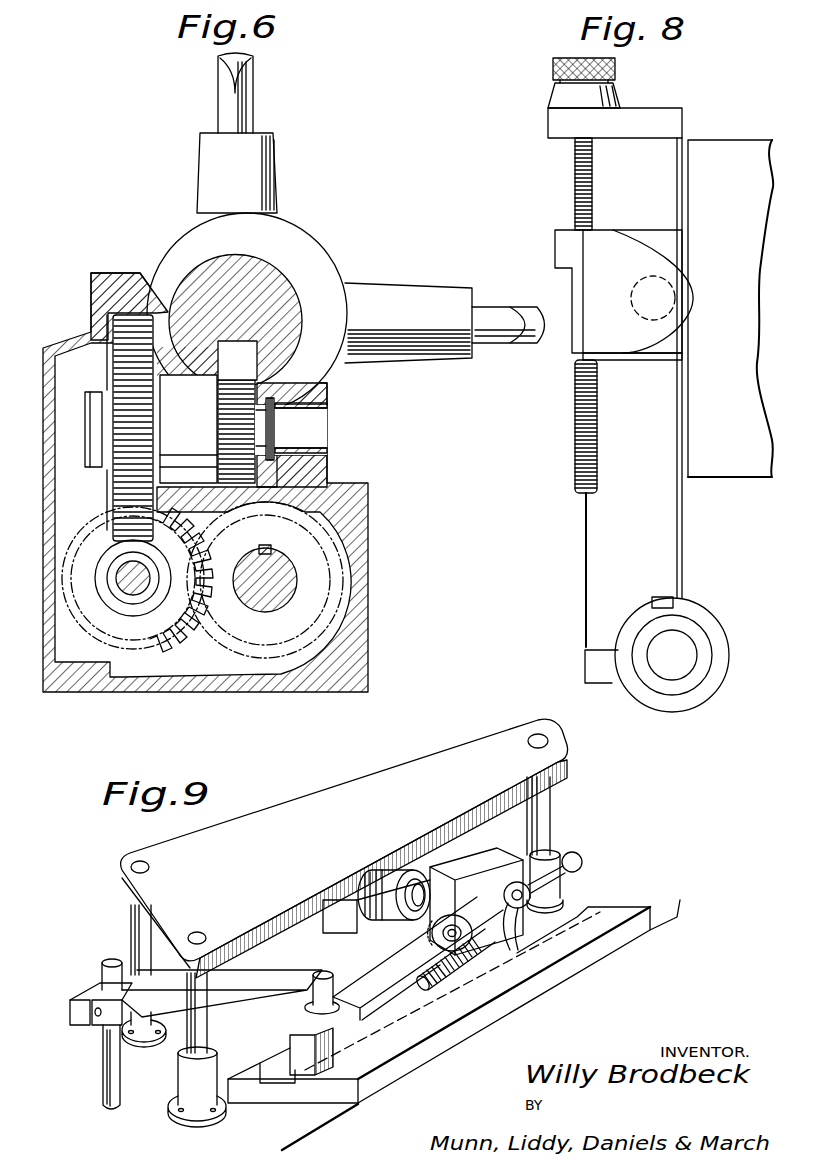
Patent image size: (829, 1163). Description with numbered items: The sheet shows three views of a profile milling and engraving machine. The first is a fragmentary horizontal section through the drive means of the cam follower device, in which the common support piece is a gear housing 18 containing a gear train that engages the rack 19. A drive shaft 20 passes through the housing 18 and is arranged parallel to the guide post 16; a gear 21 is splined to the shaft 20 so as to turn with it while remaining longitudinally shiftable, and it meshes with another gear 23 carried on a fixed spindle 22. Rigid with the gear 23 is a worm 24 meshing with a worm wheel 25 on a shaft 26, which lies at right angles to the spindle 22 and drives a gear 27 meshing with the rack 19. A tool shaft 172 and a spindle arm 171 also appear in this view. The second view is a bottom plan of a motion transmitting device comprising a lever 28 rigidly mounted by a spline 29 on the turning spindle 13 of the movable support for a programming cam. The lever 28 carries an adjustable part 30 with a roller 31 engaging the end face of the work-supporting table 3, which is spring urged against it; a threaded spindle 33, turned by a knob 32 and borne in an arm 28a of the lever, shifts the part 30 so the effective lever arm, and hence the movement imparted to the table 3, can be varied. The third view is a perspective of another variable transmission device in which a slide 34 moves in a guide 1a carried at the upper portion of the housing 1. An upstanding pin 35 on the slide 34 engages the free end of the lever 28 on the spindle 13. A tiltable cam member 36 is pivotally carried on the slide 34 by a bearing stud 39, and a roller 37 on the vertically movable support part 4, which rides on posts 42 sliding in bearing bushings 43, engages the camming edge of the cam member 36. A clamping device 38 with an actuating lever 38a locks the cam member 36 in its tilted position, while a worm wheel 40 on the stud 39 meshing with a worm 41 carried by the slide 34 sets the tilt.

In FIG. 6, the tool shaft 172 is at (248, 107).
In FIG. 6, the guide post 16 is at (212, 283).
In FIG. 6, the rack 19 is at (225, 353).
In FIG. 6, the worm wheel 25 is at (125, 338).
In FIG. 6, the gear 27 is at (218, 391).
In FIG. 6, the shaft 26 is at (317, 425).
In FIG. 6, the gear housing 18 is at (355, 526).
In FIG. 6, the fixed spindle 22 is at (120, 572).
In FIG. 6, the gear 23 is at (73, 617).
In FIG. 6, the worm 24 is at (145, 613).
In FIG. 6, the drive shaft 20 is at (263, 603).
In FIG. 6, the gear 21 is at (323, 622).
In FIG. 6, the spindle arm 171 is at (493, 312).
In FIG. 8, the turnable knob 32 is at (562, 67).
In FIG. 8, the arm of the lever 28a is at (667, 118).
In FIG. 8, the threaded spindle 33 is at (573, 168).
In FIG. 8, the adjustable part 30 is at (600, 285).
In FIG. 8, the roller 31 is at (680, 293).
In FIG. 8, the work-supporting table 3 is at (733, 465).
In FIG. 8, the lever 28 is at (615, 523).
In FIG. 9, the lever 28 is at (143, 977).
In FIG. 8, the spline 29 is at (672, 598).
In FIG. 8, the turning spindle 13 is at (663, 662).
In FIG. 9, the turning spindle 13 is at (104, 1057).
In FIG. 9, the vertically shiftable supporting member 4 is at (297, 820).
In FIG. 9, the roller 37 is at (380, 883).
In FIG. 9, the tiltable cam member 36 is at (448, 880).
In FIG. 9, the bearing stud or peg 39 is at (443, 870).
In FIG. 9, the guide rods or posts 42 is at (140, 928).
In FIG. 9, the actuating lever 38a is at (582, 860).
In FIG. 9, the bearing bushings 43 is at (145, 1037).
In FIG. 9, the housing 1 is at (563, 945).
In FIG. 9, the clamping device 38 is at (545, 940).
In FIG. 9, the worm wheel 40 is at (458, 948).
In FIG. 9, the worm 41 is at (440, 992).
In FIG. 9, the slide 34 is at (378, 1003).
In FIG. 9, the upstanding pin or roller 35 is at (372, 1040).
In FIG. 9, the guide 1a is at (278, 1083).